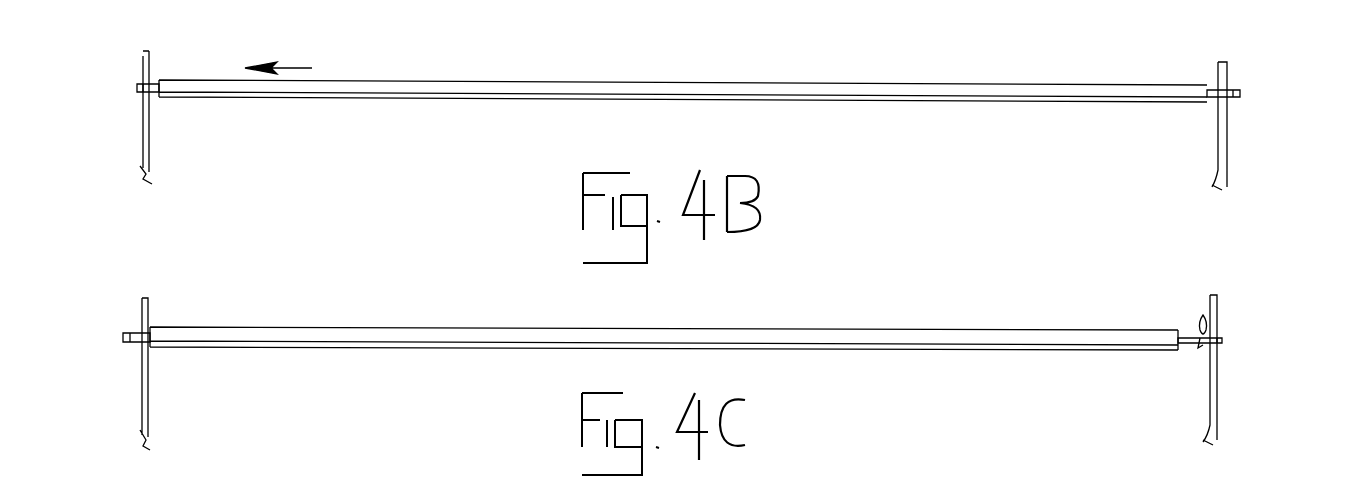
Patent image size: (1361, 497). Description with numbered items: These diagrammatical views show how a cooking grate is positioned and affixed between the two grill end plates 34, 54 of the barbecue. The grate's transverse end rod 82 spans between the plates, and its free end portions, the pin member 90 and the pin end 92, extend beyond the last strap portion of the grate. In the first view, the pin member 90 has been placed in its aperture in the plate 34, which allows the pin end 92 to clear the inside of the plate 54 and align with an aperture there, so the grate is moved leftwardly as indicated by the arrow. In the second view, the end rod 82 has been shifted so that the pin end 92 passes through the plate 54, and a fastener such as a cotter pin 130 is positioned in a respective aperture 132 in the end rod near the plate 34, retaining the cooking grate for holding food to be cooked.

In FIG. 4B, the grill end plate 34 is at (1228, 148).
In FIG. 4C, the grill end plate 34 is at (1218, 395).
In FIG. 4B, the grill end plate 54 is at (149, 130).
In FIG. 4C, the grill end plate 54 is at (148, 393).
In FIG. 4B, the end rod 82 is at (727, 86).
In FIG. 4C, the end rod 82 is at (732, 336).
In FIG. 4B, the pin member 90 is at (1237, 92).
In FIG. 4C, the pin member 90 is at (1188, 340).
In FIG. 4C, the pin end 92 is at (132, 342).
In FIG. 4C, the cotter pin 130 is at (1203, 318).
In FIG. 4C, the aperture 132 is at (1203, 330).